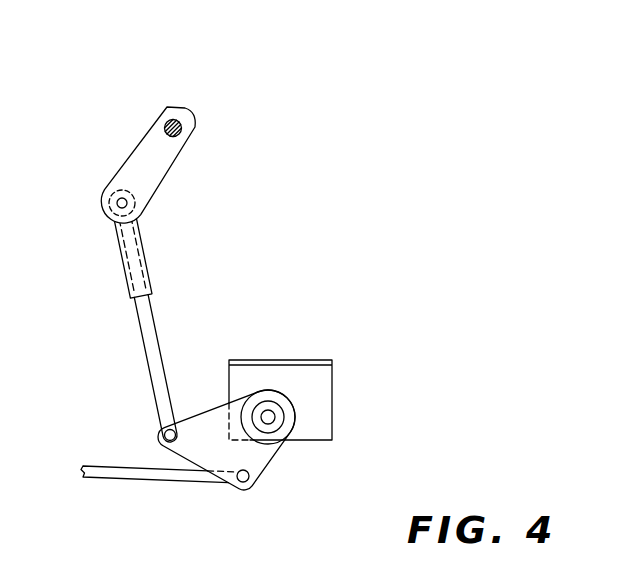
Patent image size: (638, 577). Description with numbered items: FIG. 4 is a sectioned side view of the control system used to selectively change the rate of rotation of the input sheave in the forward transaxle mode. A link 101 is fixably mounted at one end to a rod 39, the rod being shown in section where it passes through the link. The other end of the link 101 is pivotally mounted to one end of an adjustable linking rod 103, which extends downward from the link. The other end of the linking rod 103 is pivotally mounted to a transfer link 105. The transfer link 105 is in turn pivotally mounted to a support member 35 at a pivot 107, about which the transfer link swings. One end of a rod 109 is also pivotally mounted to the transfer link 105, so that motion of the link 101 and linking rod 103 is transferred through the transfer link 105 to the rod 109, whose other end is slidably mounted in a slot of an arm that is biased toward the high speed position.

The support member 35 is at (284, 360).
The rod 39 is at (181, 121).
The link 101 is at (170, 170).
The adjustable linking rod 103 is at (142, 247).
The transfer link 105 is at (262, 471).
The pivot mounting of transfer link on support member 107 is at (277, 413).
The rod 109 is at (170, 482).